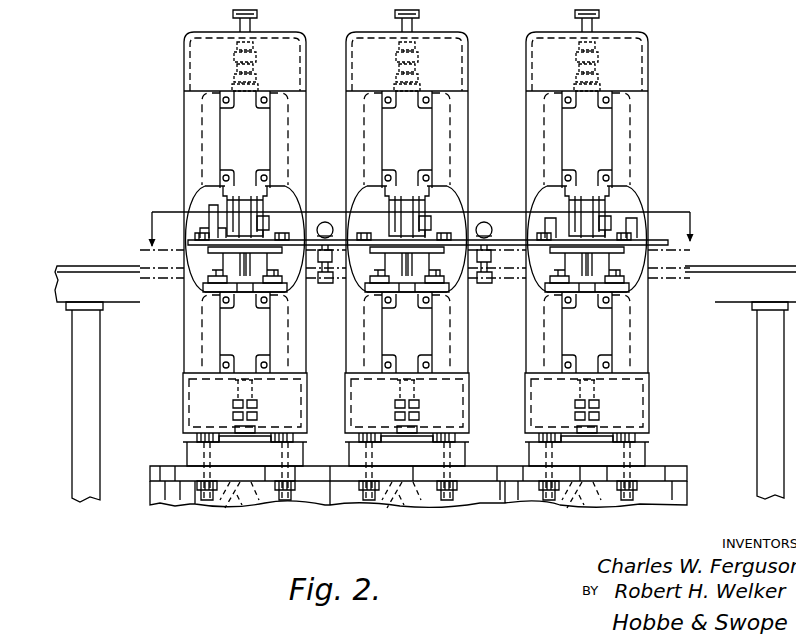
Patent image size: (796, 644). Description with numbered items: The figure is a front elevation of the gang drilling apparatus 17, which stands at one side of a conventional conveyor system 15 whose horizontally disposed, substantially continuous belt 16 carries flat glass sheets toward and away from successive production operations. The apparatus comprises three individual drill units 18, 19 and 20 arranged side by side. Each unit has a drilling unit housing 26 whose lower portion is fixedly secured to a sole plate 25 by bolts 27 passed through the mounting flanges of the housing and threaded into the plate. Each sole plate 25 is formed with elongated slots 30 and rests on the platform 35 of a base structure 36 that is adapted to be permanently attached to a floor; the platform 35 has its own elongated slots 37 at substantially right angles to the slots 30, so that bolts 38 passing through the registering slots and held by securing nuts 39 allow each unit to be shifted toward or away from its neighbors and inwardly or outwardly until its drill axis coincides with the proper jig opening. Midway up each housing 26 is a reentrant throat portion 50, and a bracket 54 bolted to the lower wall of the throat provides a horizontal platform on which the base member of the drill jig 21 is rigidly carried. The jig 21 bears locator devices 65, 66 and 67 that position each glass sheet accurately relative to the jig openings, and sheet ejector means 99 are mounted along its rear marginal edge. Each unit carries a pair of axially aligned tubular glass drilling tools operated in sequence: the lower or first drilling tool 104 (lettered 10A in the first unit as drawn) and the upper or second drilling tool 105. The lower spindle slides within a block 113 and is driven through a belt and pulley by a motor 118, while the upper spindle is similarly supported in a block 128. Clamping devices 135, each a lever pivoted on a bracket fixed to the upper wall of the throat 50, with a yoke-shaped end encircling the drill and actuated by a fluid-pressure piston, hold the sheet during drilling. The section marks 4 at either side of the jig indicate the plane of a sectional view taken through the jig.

The section line 4- 4 is at (119, 242).
The conveyor system 15 is at (117, 312).
The belt 16 is at (106, 266).
The gang drilling apparatus 17 is at (178, 83).
The drill unit 18 is at (186, 120).
The drill unit 19 is at (347, 120).
The drill unit 20 is at (527, 120).
The drill jig 21 is at (188, 243).
The sole plate 25 is at (195, 447).
The drilling unit housing 26 is at (201, 137).
The bolts 27 is at (210, 440).
The slots 30 is at (200, 456).
The platform 35 is at (150, 470).
The base structure 36 is at (156, 505).
The slots 37 is at (410, 505).
The bolts 38 is at (308, 432).
The securing nuts 39 is at (291, 497).
The throat portion 50 is at (213, 199).
The bracket 54 is at (233, 262).
The locator device 65 is at (208, 224).
The locator device 66 is at (533, 200).
The locator device 67 is at (640, 236).
The sheet ejector means 99 is at (325, 221).
The lower drilling tool 104 is at (407, 294).
The bottom plate 10A is at (245, 294).
The upper drilling tool 105 is at (245, 186).
The block 113 is at (237, 345).
The motor 118 is at (323, 284).
The block 128 is at (230, 140).
The clamping device 135 is at (266, 224).